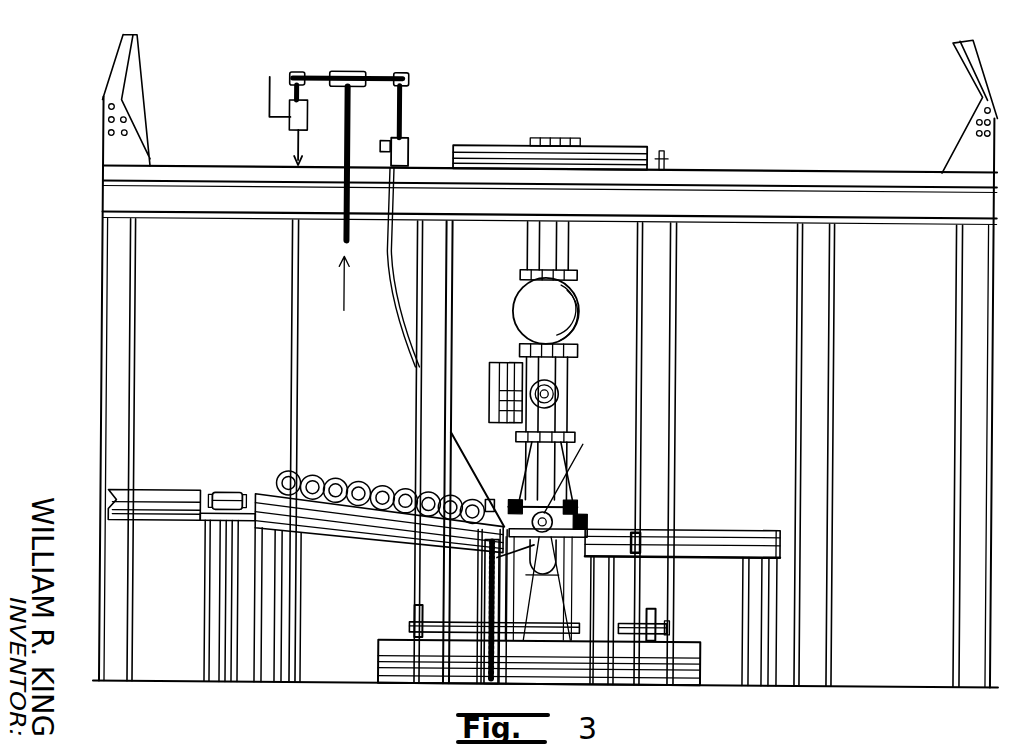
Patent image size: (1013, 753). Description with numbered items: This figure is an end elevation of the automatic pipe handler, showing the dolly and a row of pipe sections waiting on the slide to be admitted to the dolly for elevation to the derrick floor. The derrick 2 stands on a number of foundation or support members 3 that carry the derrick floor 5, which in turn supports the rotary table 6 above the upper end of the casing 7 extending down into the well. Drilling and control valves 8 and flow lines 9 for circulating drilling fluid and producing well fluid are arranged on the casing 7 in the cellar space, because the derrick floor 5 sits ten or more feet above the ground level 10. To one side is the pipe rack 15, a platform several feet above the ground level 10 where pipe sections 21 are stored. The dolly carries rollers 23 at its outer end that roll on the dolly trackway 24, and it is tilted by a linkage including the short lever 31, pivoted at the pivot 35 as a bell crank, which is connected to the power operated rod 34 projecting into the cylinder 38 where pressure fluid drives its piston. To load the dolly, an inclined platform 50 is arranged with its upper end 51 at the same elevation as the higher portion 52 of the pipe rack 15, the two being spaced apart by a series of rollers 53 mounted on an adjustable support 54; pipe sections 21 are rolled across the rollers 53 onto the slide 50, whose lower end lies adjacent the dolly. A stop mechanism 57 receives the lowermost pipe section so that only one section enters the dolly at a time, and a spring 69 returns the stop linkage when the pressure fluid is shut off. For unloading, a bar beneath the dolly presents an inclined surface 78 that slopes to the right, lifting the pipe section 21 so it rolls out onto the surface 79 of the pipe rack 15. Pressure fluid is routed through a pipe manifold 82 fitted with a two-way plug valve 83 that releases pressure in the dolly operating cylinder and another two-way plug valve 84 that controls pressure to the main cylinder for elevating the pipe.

The derrick 2 is at (138, 60).
The foundation or support members 3 is at (102, 333).
The derrick floor 5 is at (807, 170).
The rotary table 6 is at (650, 147).
The casing 7 is at (563, 243).
The drilling and control valves 8 is at (512, 372).
The flow lines 9 is at (558, 393).
The ground level 10 is at (324, 679).
The pipe rack 15 is at (160, 522).
The pipe sections 21 is at (295, 477).
The rollers 23 is at (517, 497).
The dolly trackway 24 is at (580, 528).
The short lever 31 is at (526, 470).
The power operated rod 34 is at (576, 446).
The pivot 35 is at (410, 622).
The cylinder 38 is at (556, 588).
The inclined platform 50 is at (362, 532).
The upper end 51 is at (256, 490).
The higher portion 52 is at (145, 488).
The rollers 53 is at (206, 487).
The support 54 is at (223, 523).
The stop mechanism 57 is at (486, 500).
The spring 69 is at (483, 637).
The inclined surface 78 is at (505, 552).
The surface 79 is at (690, 528).
The pipe manifold 82 is at (351, 80).
The two-way plug valve 83 is at (293, 110).
The two-way plug valve 84 is at (406, 151).